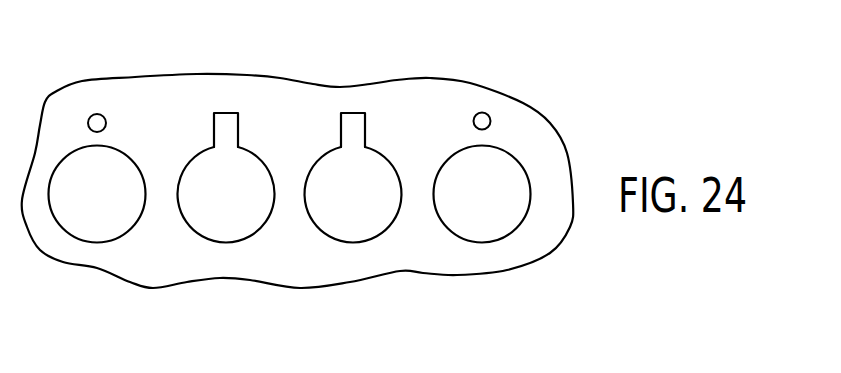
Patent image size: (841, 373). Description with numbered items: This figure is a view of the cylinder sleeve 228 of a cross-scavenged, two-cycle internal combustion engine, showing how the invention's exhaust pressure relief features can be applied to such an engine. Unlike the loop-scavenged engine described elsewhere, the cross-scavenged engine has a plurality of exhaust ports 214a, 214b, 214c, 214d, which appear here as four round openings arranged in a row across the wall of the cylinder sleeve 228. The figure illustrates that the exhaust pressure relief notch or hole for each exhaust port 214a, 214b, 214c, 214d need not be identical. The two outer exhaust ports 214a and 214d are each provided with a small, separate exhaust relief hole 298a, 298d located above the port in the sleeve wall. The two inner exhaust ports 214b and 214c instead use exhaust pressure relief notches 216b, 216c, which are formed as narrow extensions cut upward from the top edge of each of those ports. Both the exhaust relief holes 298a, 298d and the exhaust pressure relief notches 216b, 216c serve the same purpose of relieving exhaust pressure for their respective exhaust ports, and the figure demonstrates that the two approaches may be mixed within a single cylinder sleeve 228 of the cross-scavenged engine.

The cylinder sleeve 228 is at (323, 99).
The exhaust port 214a is at (99, 242).
The exhaust port 214b is at (228, 242).
The exhaust port 214c is at (356, 241).
The exhaust port 214d is at (449, 227).
The exhaust pressure relief notch 216b is at (236, 130).
The exhaust pressure relief notch 216c is at (362, 130).
The exhaust relief hole 298a is at (101, 121).
The exhaust relief hole 298d is at (489, 128).